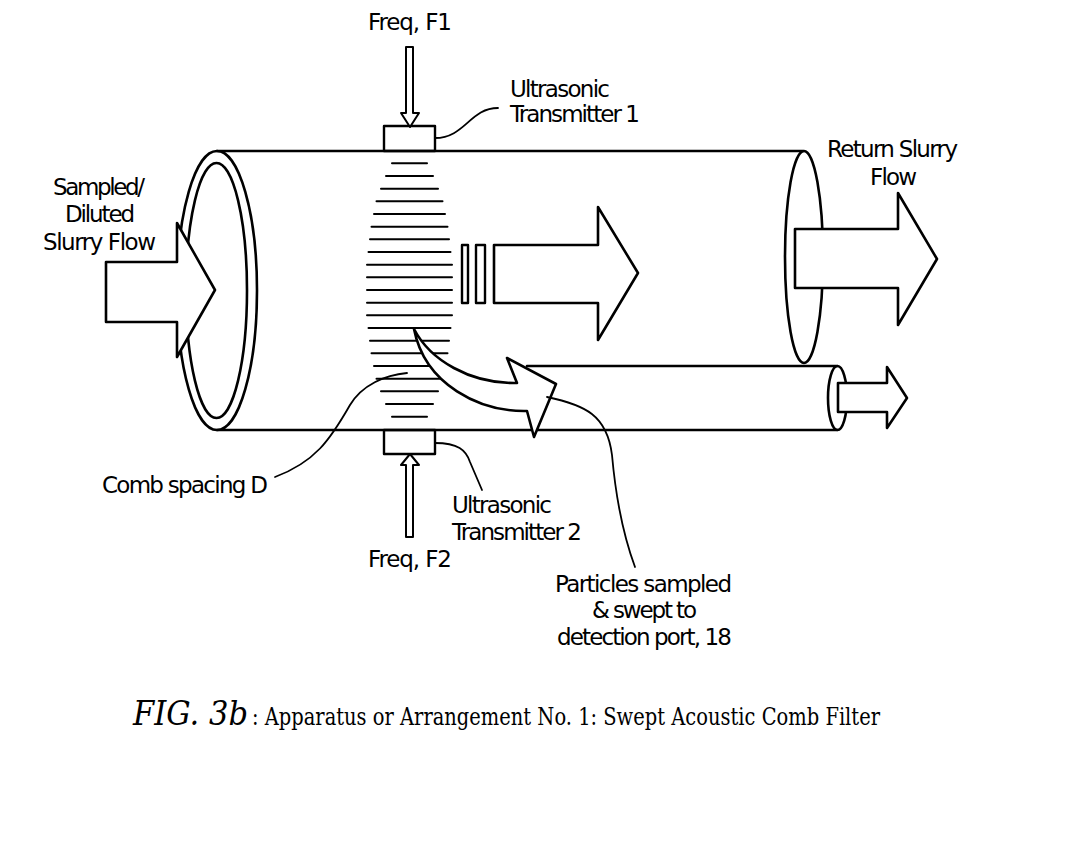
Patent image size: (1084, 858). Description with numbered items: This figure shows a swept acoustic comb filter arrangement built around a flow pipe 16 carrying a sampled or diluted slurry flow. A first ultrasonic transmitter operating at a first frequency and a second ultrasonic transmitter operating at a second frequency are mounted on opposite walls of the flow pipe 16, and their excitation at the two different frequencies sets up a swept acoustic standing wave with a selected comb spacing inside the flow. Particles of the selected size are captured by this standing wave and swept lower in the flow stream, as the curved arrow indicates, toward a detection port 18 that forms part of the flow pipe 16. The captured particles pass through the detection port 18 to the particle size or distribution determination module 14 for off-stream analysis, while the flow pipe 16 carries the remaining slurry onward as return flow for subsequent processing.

The flow pipe 16 is at (730, 150).
The detection port 18 is at (703, 431).
The particle size or distribution determination module 14 is at (879, 459).